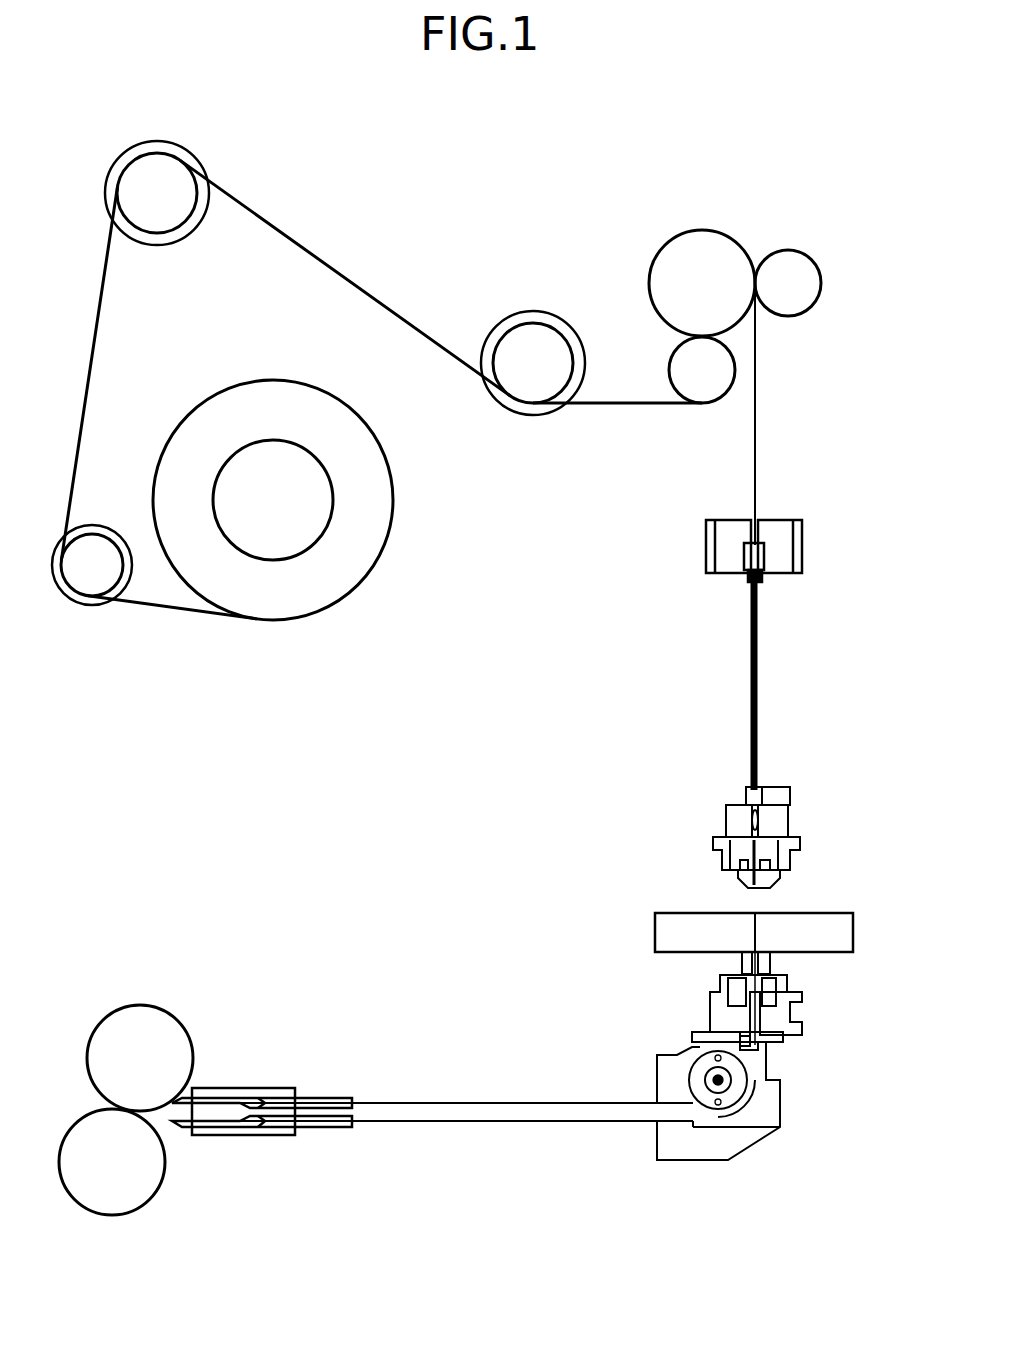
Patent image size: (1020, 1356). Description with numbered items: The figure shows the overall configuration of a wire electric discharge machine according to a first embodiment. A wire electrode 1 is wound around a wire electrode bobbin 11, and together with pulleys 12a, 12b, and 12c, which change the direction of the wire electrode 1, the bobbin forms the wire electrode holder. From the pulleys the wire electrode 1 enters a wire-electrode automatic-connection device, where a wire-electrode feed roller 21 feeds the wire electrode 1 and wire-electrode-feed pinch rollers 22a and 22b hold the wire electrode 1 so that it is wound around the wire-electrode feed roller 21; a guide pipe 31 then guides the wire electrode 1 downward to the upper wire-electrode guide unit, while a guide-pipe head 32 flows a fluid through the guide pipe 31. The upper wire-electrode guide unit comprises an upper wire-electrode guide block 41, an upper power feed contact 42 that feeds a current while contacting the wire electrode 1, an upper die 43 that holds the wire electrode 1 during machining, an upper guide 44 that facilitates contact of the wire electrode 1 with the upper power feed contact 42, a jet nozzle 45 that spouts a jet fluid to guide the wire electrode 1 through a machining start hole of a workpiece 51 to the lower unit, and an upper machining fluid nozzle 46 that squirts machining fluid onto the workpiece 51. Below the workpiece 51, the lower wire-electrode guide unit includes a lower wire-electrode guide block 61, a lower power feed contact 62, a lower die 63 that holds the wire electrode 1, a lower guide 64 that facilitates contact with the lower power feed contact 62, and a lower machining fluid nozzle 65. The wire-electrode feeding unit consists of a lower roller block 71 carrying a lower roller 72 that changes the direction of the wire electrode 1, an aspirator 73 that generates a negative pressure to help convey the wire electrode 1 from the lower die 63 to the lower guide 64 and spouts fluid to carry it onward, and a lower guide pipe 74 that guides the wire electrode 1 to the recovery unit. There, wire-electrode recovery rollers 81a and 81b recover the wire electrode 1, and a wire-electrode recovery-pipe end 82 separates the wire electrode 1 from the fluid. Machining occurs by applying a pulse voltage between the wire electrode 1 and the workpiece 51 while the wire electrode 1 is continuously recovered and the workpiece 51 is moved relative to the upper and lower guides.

The wire electrode 1 is at (318, 250).
The wire electrode bobbin 11 is at (345, 572).
The pulley 12a is at (80, 585).
The pulley 12b is at (157, 170).
The pulley 12c is at (530, 342).
The wire-electrode feed roller 21 is at (700, 252).
The wire-electrode-feed pinch roller 22a is at (703, 392).
The wire-electrode-feed pinch roller 22b is at (788, 268).
The guide pipe 31 is at (750, 688).
The guide-pipe head 32 is at (728, 550).
The upper wire-electrode guide block 41 is at (728, 822).
The upper power feed contact 42 is at (770, 830).
The upper die 43 is at (765, 868).
The upper guide 44 is at (756, 790).
The jet nozzle 45 is at (730, 865).
The upper machining fluid nozzle 46 is at (740, 875).
The workpiece 51 is at (655, 930).
The lower wire-electrode guide block 61 is at (717, 1012).
The lower power feed contact 62 is at (765, 1008).
The lower die 63 is at (765, 958).
The lower guide 64 is at (758, 1042).
The lower machining fluid nozzle 65 is at (740, 962).
The lower roller block 71 is at (700, 1145).
The lower roller 72 is at (700, 1080).
The aspirator 73 is at (762, 1050).
The lower guide pipe 74 is at (578, 1122).
The wire-electrode recovery roller 81a is at (142, 1025).
The wire-electrode recovery roller 81b is at (115, 1200).
The wire-electrode recovery-pipe end 82 is at (240, 1132).